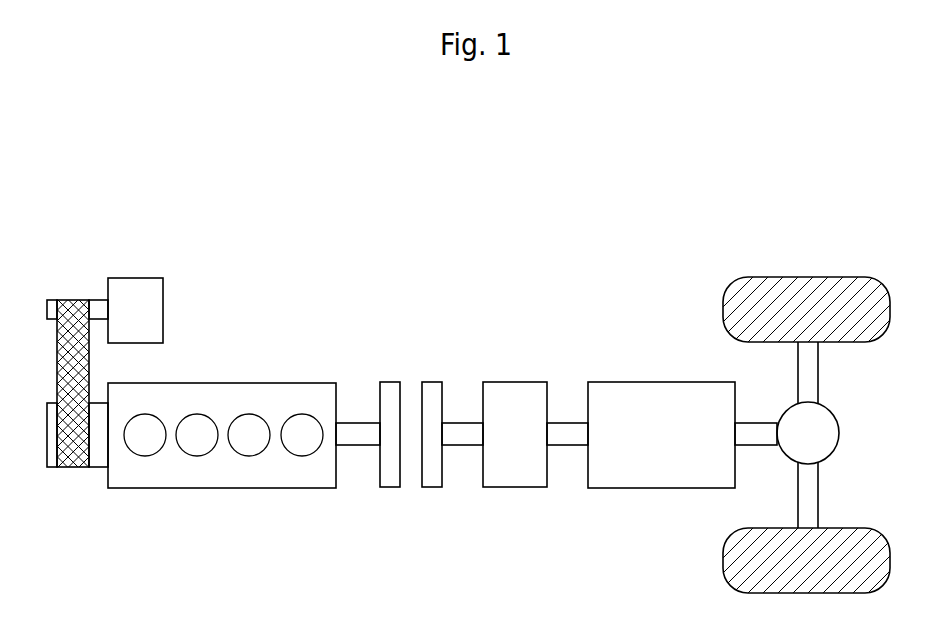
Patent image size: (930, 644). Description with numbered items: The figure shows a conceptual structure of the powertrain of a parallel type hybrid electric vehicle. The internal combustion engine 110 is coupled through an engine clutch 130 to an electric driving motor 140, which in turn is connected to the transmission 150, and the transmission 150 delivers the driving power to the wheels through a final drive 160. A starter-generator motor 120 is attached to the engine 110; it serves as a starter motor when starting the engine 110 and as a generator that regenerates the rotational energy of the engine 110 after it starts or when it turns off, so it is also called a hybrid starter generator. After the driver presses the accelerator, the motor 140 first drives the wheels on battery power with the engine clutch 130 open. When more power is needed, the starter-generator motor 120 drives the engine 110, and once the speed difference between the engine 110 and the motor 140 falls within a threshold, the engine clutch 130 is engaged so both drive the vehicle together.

The internal combustion engine 110 is at (293, 382).
The starter-generator motor 120 is at (163, 292).
The engine clutch 130 is at (437, 383).
The electric motor 140 is at (520, 380).
The transmission 150 is at (695, 380).
The final drive 160 is at (837, 418).